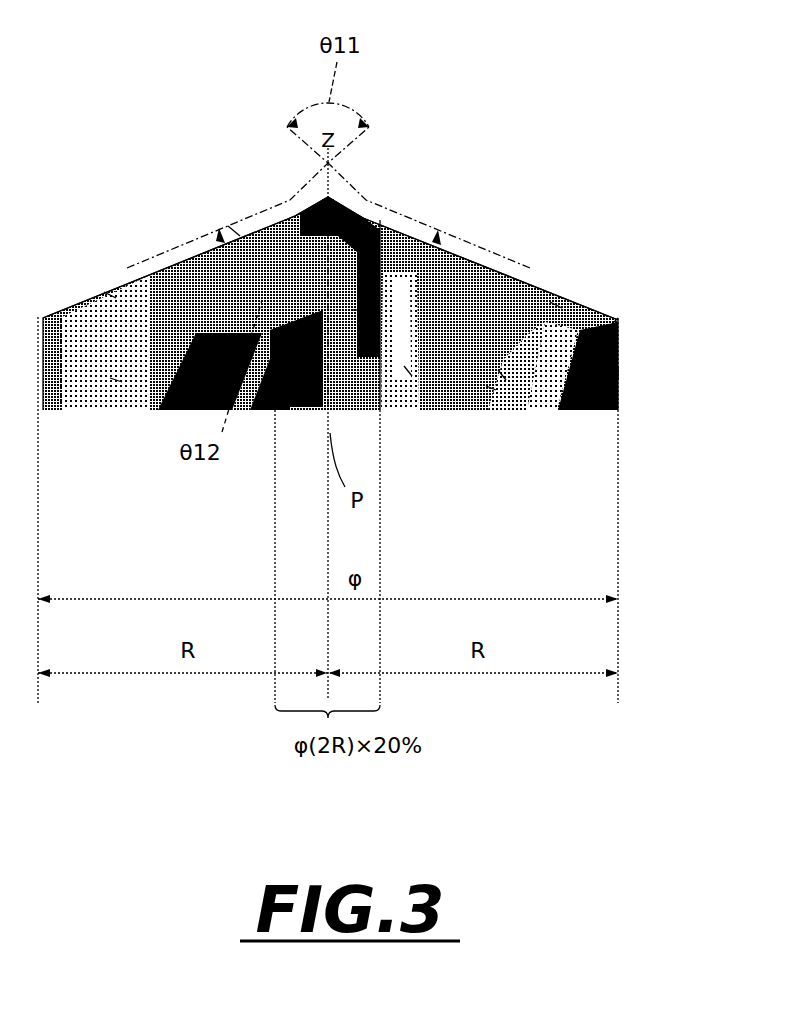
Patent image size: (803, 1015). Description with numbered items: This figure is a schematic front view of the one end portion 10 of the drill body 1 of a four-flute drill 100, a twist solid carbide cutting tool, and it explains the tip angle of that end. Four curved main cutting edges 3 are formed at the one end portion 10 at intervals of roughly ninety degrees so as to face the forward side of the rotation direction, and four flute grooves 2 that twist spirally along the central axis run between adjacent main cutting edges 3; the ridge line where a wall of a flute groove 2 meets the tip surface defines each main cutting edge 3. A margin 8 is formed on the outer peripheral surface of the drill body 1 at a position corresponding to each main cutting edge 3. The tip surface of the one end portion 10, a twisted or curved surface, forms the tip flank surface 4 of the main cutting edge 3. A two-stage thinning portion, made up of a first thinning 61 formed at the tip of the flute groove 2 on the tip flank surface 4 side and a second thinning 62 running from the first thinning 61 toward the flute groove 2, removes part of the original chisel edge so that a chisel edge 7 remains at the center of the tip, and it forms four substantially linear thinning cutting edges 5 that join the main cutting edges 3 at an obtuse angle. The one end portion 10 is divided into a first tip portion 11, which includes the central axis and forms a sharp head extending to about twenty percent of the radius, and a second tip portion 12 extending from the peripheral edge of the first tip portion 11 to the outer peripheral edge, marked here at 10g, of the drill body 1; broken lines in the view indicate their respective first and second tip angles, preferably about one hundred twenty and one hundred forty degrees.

The 4 flute drill 100 is at (172, 130).
The drill body 1 is at (618, 373).
The flute groove 2 is at (116, 380).
The main cutting edge 3 is at (110, 295).
The tip flank surface 4 is at (193, 383).
The thinning cutting edge 5 is at (258, 242).
The first thinning 61 is at (305, 232).
The second thinning 62 is at (235, 232).
The chisel edge 7 is at (338, 190).
The margin 8 is at (266, 385).
The one end portion 10 is at (535, 162).
The outer peripheral corner of cutting edge 10g is at (622, 315).
The first tip portion 11 is at (353, 199).
The second tip portion 12 is at (478, 259).